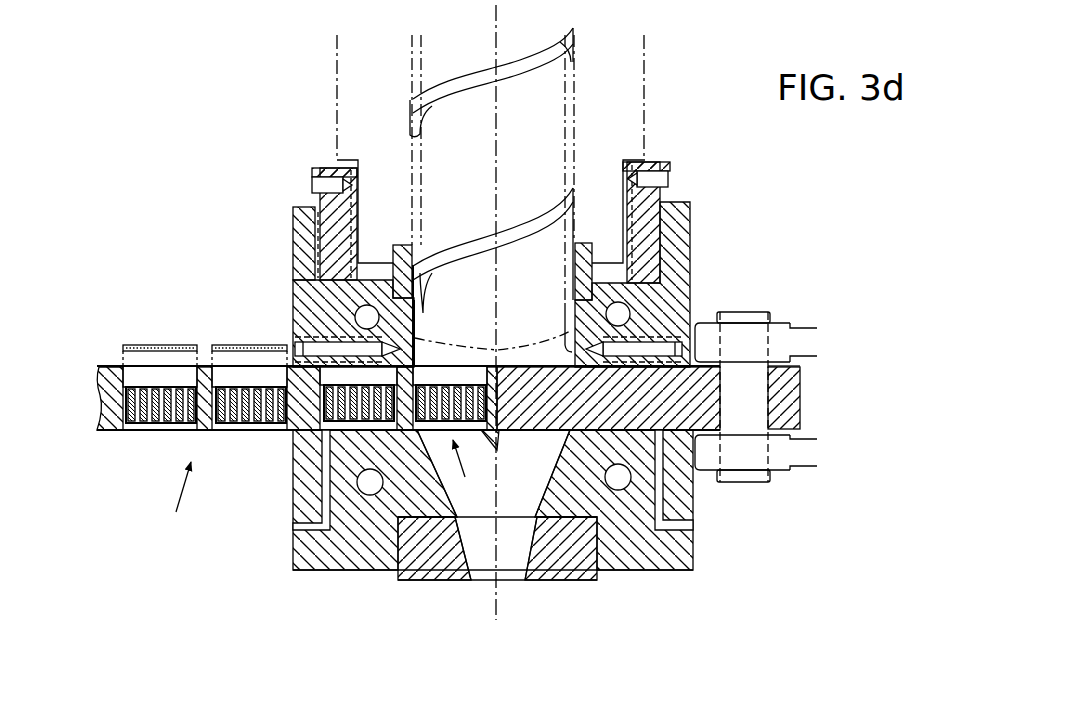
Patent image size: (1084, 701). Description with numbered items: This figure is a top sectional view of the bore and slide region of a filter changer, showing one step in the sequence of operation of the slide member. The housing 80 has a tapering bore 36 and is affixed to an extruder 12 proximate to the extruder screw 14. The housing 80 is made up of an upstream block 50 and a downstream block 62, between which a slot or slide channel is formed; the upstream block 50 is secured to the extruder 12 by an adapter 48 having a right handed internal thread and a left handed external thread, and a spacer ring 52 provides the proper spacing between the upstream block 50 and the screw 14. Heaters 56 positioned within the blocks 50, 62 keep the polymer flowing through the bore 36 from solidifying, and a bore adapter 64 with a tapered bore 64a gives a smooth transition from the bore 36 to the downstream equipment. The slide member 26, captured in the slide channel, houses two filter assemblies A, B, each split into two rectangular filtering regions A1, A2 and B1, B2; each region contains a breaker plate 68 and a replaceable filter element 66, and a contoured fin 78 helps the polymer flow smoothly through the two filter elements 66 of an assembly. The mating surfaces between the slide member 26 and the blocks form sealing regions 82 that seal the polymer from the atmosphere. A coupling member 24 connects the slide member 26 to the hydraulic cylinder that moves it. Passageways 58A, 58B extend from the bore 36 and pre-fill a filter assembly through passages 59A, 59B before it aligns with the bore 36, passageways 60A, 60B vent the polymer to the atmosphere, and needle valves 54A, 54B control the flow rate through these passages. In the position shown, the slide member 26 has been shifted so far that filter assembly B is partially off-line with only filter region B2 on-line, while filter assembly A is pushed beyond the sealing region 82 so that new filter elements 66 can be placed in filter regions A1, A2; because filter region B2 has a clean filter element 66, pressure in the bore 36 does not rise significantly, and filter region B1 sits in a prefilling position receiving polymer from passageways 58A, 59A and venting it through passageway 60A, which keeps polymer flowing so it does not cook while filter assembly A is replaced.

The extruder 12 is at (646, 112).
The extruder screw 14 is at (522, 57).
The coupling member 24 is at (753, 340).
The slide member 26 is at (113, 433).
The tapering bore 36 is at (508, 268).
The adapter 48 is at (322, 168).
The upstream block 50 is at (298, 208).
The spacer ring 52 is at (401, 245).
The needle valve 54A is at (317, 347).
The needle valve 54B is at (670, 340).
The heaters 56 is at (357, 314).
The passageway 58A is at (416, 352).
The passageway 58B is at (563, 345).
The passage 59A is at (405, 368).
The passage 59B is at (595, 368).
The passageway 60A is at (293, 525).
The passageway 60B is at (693, 523).
The downstream block 62 is at (333, 572).
The bore adapter 64 is at (573, 571).
The tapered bore 64a is at (483, 571).
The filter element 66 is at (220, 343).
The breaker plate 68 is at (233, 435).
The contoured fin 78 is at (500, 437).
The housing 80 is at (712, 574).
The sealing regions 82 is at (290, 433).
The filter assembly A is at (177, 502).
The filtering region A1 is at (140, 378).
The filtering region A2 is at (263, 378).
The filter assembly B is at (465, 473).
The filtering region B1 is at (353, 377).
The filtering region B2 is at (450, 375).